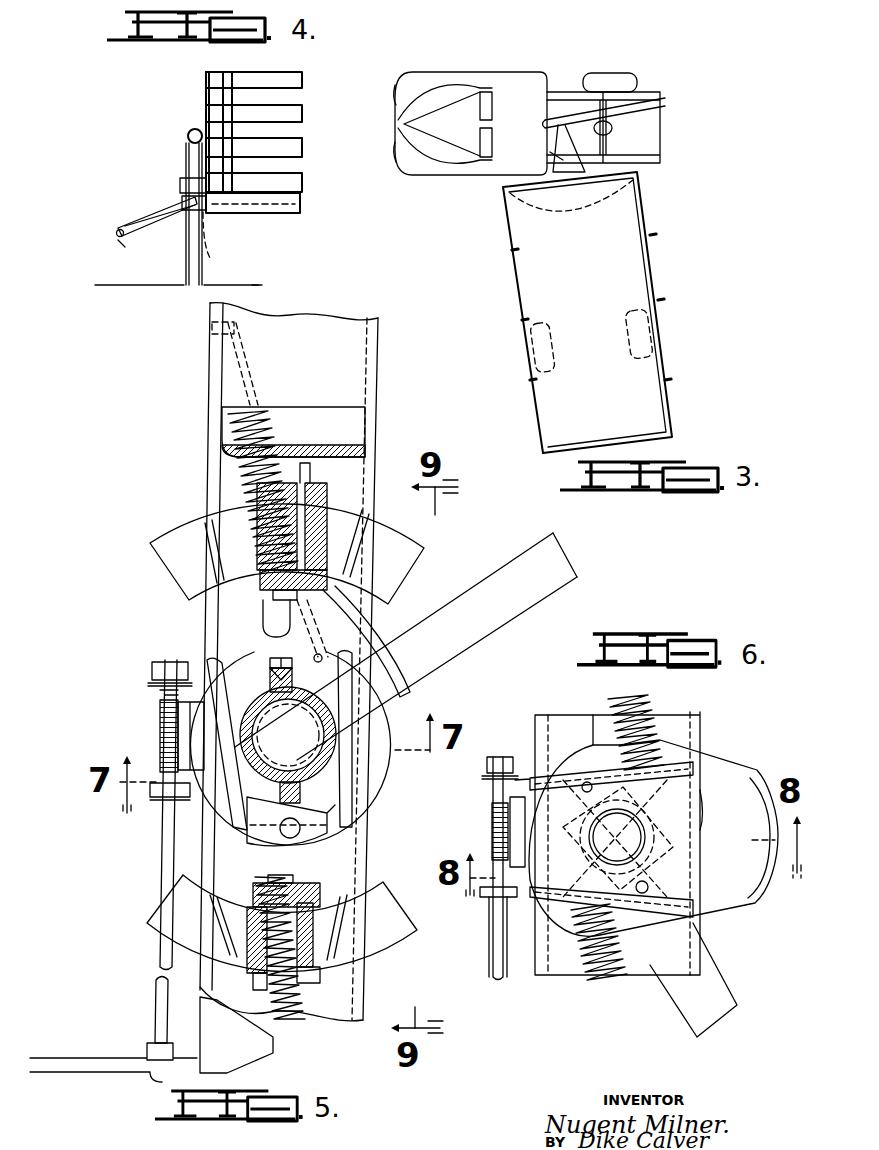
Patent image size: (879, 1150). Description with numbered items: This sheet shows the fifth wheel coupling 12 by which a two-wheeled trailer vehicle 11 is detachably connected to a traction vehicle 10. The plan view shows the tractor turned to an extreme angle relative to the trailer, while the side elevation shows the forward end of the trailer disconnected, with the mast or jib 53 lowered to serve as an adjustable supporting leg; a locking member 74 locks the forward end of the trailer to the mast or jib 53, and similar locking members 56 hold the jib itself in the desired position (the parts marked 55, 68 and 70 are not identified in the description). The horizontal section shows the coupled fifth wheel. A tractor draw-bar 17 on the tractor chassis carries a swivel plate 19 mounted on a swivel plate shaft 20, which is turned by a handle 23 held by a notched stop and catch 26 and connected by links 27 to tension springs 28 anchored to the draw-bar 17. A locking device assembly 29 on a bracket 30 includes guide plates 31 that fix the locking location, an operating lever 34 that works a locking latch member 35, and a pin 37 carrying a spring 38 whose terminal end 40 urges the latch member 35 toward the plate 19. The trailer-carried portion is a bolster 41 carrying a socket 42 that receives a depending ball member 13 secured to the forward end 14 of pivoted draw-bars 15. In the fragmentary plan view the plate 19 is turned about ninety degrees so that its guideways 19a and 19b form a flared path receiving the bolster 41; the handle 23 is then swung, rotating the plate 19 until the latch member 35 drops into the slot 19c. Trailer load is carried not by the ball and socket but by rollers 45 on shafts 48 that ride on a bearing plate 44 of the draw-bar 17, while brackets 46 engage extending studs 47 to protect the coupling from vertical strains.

In FIG. 3, the traction vehicle 10 is at (570, 92).
In FIG. 4, the trailer vehicle 11 is at (302, 118).
In FIG. 3, the trailer vehicle 11 is at (655, 238).
In FIG. 3, the fifth wheel coupling 12 is at (575, 120).
In FIG. 4, the ball member 13 is at (118, 236).
In FIG. 3, the ball member 13 is at (550, 152).
In FIG. 4, the forward end 14 is at (128, 244).
In FIG. 4, the pivoted draw-bars 15 is at (160, 225).
In FIG. 5, the tractor draw-bar 17 is at (380, 378).
In FIG. 6, the tractor draw-bar 17 is at (702, 732).
In FIG. 5, the swivel plate 19 is at (358, 818).
In FIG. 6, the swivel plate 19 is at (560, 965).
In FIG. 5, the guideway 19a is at (390, 668).
In FIG. 6, the guideway 19a is at (700, 895).
In FIG. 5, the guideway 19b is at (270, 675).
In FIG. 6, the guideway 19b is at (705, 812).
In FIG. 6, the slot 19c is at (597, 713).
In FIG. 6, the swivel plate shaft 20 is at (645, 850).
In FIG. 5, the handle 23 is at (483, 640).
In FIG. 6, the handle 23 is at (738, 995).
In FIG. 5, the notched stop and catch 26 is at (405, 622).
In FIG. 5, the links 27 is at (315, 640).
In FIG. 6, the links 27 is at (690, 866).
In FIG. 5, the tension spring 28 is at (245, 470).
In FIG. 6, the tension spring 28 is at (648, 700).
In FIG. 5, the locking device assembly 29 is at (160, 733).
In FIG. 5, the bracket 30 is at (157, 810).
In FIG. 6, the bracket 30 is at (493, 838).
In FIG. 5, the guide plates 31 is at (178, 660).
In FIG. 5, the operating lever 34 is at (155, 790).
In FIG. 6, the operating lever 34 is at (492, 965).
In FIG. 5, the locking latch member 35 is at (165, 700).
In FIG. 6, the locking latch member 35 is at (526, 862).
In FIG. 5, the pin 37 is at (180, 740).
In FIG. 6, the pin 37 is at (585, 785).
In FIG. 5, the spring 38 is at (162, 712).
In FIG. 6, the spring 38 is at (492, 815).
In FIG. 6, the terminal end 40 is at (528, 775).
In FIG. 5, the bolster 41 is at (380, 770).
In FIG. 5, the socket 42 is at (262, 705).
In FIG. 5, the bearing plate 44 is at (152, 546).
In FIG. 5, the rollers 45 is at (330, 522).
In FIG. 5, the brackets 46 is at (366, 450).
In FIG. 3, the extending studs 47 is at (650, 112).
In FIG. 5, the shafts 48 is at (312, 480).
In FIG. 4, the mast or jib 53 is at (186, 150).
In FIG. 4, the ring 55 is at (196, 129).
In FIG. 4, the locking members 56 is at (180, 200).
In FIG. 4, the cable 68 is at (221, 243).
In FIG. 4, the base plate 70 is at (300, 195).
In FIG. 4, the locking member 74 is at (165, 210).